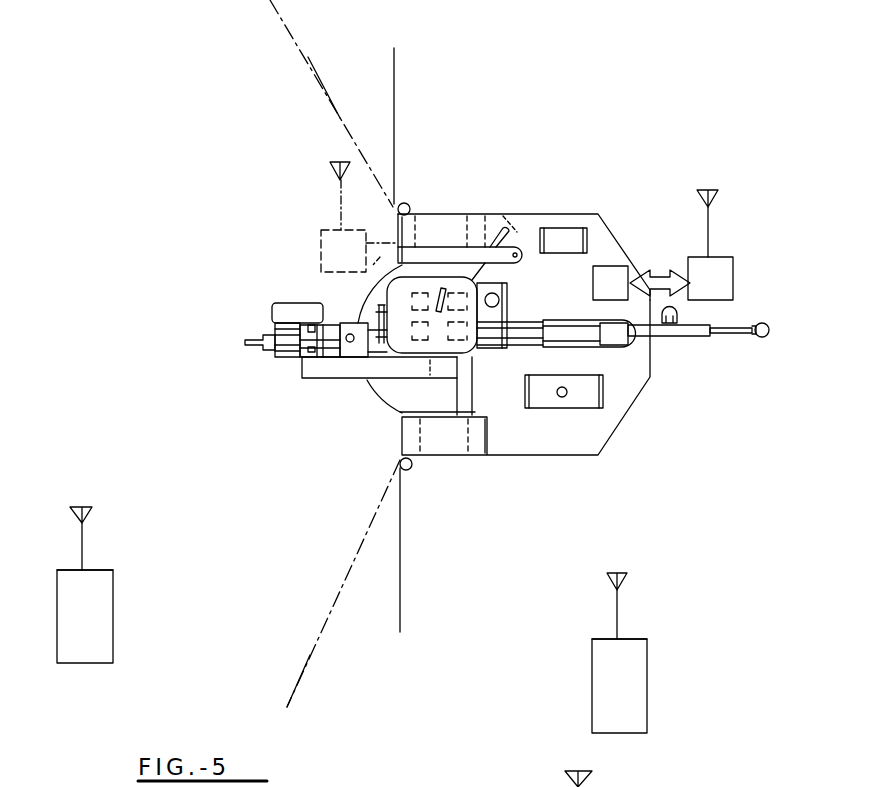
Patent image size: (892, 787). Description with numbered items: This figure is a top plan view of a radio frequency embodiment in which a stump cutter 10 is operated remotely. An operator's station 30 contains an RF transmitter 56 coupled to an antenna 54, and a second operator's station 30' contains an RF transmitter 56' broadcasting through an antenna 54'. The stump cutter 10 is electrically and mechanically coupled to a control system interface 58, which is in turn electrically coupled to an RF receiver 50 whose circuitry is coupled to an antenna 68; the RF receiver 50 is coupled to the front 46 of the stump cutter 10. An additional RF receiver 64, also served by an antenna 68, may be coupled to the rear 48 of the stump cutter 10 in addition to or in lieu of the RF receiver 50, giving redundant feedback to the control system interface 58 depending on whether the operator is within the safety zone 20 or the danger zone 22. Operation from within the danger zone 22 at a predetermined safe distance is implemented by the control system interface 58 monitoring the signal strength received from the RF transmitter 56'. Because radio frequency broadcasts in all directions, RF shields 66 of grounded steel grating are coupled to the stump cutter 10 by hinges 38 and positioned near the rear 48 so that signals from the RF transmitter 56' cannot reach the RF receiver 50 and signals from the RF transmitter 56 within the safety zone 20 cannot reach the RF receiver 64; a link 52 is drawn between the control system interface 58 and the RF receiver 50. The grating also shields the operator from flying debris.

The stump cutter 10 is at (208, 226).
The safety zone 20 is at (308, 54).
The danger zone 22 is at (315, 77).
The operator's station 30 is at (665, 686).
The operator's station 30' is at (127, 619).
The hinges 38 is at (409, 204).
The front 46 is at (650, 365).
The rear 48 is at (380, 397).
The RF receiver 50 is at (733, 275).
The signal link 52 is at (380, 270).
The antenna 54 is at (634, 680).
The antenna 54' is at (121, 534).
The RF transmitter 56 is at (648, 638).
The RF transmitter 56' is at (115, 557).
The control system interface 58 is at (598, 266).
The RF receiver 64 is at (321, 262).
The RF shields 66 is at (394, 99).
The antenna 68 is at (330, 164).